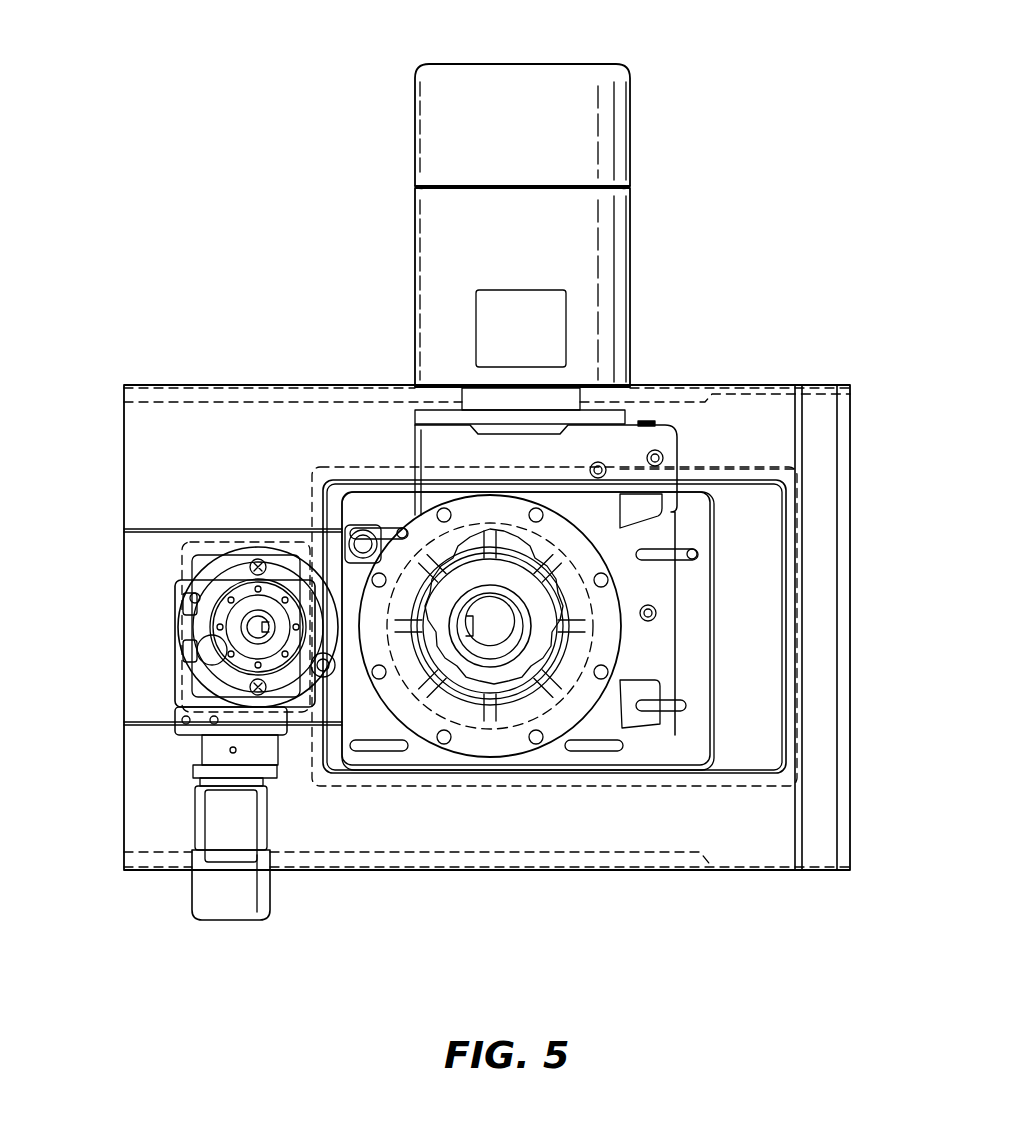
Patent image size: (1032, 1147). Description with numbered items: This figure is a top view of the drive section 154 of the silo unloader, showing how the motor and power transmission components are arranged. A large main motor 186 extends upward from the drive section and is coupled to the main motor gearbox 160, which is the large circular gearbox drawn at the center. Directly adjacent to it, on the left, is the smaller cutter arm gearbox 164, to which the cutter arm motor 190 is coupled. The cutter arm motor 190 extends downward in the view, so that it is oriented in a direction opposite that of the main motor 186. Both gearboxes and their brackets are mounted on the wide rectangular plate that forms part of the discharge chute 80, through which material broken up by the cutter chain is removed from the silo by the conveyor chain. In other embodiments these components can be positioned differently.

The drive section 154 is at (224, 208).
The discharge chute 80 is at (130, 447).
The main motor 186 is at (602, 118).
The main motor gearbox 160 is at (578, 552).
The cutter arm gearbox 164 is at (186, 631).
The cutter arm motor 190 is at (220, 897).